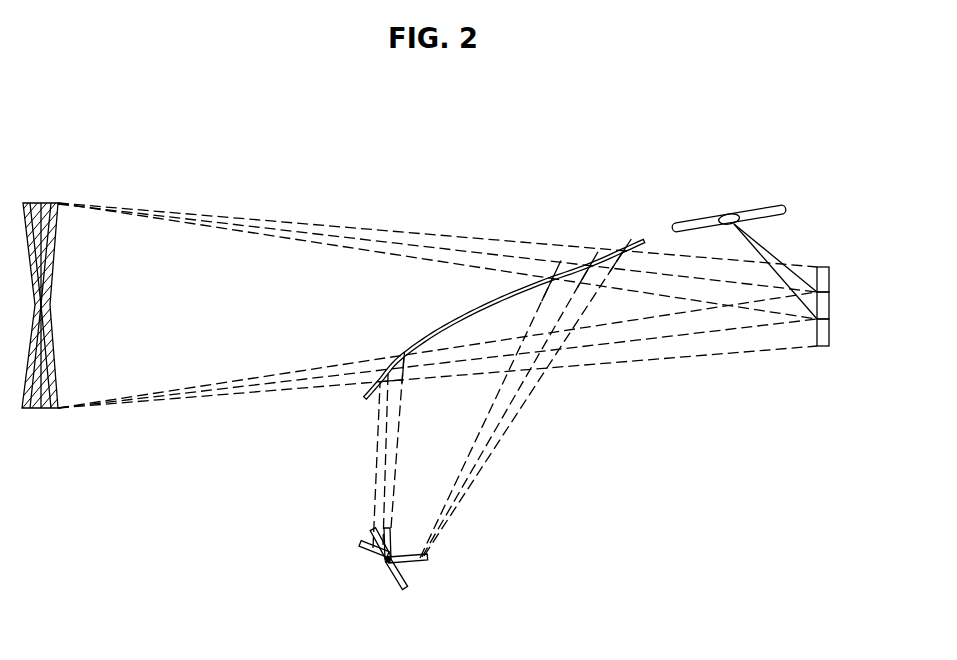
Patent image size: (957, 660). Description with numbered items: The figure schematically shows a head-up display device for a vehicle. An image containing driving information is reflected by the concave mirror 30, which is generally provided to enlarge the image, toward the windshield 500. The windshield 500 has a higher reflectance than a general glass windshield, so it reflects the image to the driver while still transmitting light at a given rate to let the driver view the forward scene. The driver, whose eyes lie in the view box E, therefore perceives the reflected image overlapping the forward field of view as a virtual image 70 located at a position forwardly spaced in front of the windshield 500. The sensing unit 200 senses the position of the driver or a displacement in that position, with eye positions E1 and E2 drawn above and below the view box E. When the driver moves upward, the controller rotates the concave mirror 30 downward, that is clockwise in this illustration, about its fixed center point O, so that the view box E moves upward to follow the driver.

The virtual image 70 is at (32, 203).
The windshield 500 is at (636, 239).
The sensing unit 200 is at (683, 226).
The first eye position E1 is at (830, 281).
The view box E is at (830, 307).
The second eye position E2 is at (830, 334).
The concave mirror 30 is at (397, 590).
The center point O is at (386, 564).